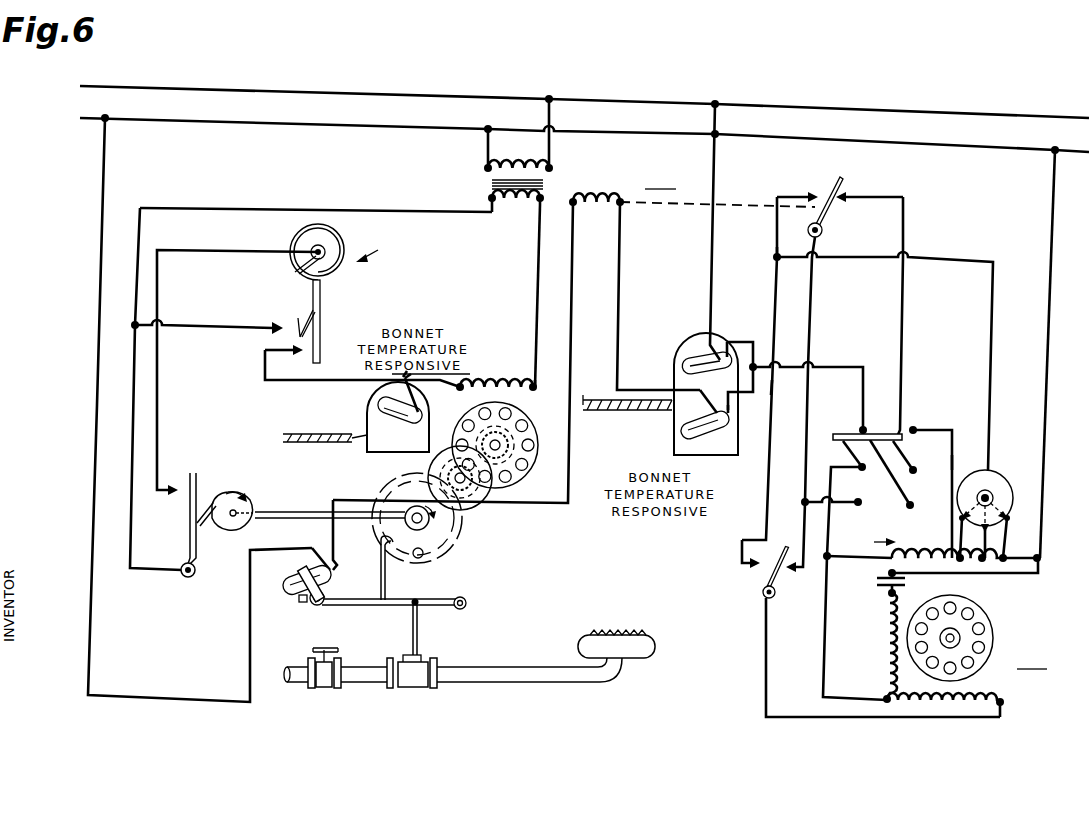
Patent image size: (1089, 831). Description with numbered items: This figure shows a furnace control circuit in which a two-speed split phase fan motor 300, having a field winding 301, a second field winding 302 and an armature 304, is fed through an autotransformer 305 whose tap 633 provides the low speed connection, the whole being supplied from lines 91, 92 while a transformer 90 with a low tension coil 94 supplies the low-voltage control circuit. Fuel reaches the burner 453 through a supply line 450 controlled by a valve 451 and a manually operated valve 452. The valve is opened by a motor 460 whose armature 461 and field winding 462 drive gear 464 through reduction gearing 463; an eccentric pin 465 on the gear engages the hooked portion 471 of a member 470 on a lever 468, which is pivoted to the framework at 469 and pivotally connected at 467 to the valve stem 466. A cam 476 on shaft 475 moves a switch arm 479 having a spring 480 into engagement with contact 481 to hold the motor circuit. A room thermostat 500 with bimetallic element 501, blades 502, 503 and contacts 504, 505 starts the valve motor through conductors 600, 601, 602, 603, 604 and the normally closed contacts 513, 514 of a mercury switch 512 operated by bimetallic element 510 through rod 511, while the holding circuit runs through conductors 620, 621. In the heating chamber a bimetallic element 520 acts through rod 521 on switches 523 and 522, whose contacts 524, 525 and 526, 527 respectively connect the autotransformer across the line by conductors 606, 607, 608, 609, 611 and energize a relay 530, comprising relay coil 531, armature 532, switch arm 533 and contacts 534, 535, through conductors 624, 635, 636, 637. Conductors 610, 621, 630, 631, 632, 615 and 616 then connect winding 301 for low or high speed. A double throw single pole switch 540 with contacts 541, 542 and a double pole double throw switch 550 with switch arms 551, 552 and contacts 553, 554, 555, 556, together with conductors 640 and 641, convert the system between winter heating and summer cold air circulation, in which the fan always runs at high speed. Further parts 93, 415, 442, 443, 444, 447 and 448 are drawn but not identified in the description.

The transformer 90 is at (548, 187).
The line 91 is at (850, 106).
The line 92 is at (887, 138).
The primary winding 93 is at (522, 158).
The low tension coil 94 is at (516, 212).
The two speed motor 300 is at (1032, 662).
The field winding 301 is at (966, 706).
The second field winding 302 is at (884, 632).
The armature 304 is at (976, 492).
The autotransformer 305 is at (866, 541).
The capacitor 415 is at (988, 576).
The valve lever 442 is at (298, 576).
The link 443 is at (312, 549).
The link 444 is at (338, 564).
The cam follower 447 is at (256, 532).
The pivot 448 is at (226, 544).
The fuel supply line 450 is at (369, 690).
The valve 451 is at (408, 688).
The manually operated valve 452 is at (312, 690).
The burner 453 is at (658, 651).
The motor 460 is at (540, 420).
The armature 461 is at (538, 460).
The field winding 462 is at (490, 380).
The reduction gearing 463 is at (474, 510).
The gear 464 is at (463, 527).
The pin 465 is at (424, 554).
The valve stem 466 is at (420, 634).
The pivotal connection 467 is at (404, 608).
The lever 468 is at (352, 606).
The pivot 469 is at (465, 606).
The member 470 is at (388, 580).
The hooked portion 471 is at (400, 534).
The shaft 475 is at (310, 508).
The cam 476 is at (250, 494).
The switch arm 479 is at (188, 506).
The spring 480 is at (208, 500).
The contact 481 is at (176, 486).
The room thermostat 500 is at (375, 245).
The bimetallic element 501 is at (296, 236).
The blade 502 is at (321, 316).
The blade 503 is at (302, 316).
The contact 504 is at (292, 348).
The contact 505 is at (276, 325).
The bimetallic element 510 is at (337, 428).
The rod 511 is at (284, 440).
The mercury switch 512 is at (397, 418).
The contact 513 is at (368, 394).
The contact 514 is at (419, 404).
The bimetallic element 520 is at (647, 430).
The rod 521 is at (583, 398).
The switch 522 is at (705, 433).
The switch 523 is at (686, 350).
The contact 524 is at (712, 333).
The contact 525 is at (720, 337).
The contact 526 is at (695, 402).
The contact 527 is at (729, 416).
The relay 530 is at (660, 179).
The relay coil 531 is at (579, 202).
The armature 532 is at (674, 222).
The switch arm 533 is at (842, 196).
The contact 534 is at (816, 194).
The contact 535 is at (849, 202).
The double throw single pole switch 540 is at (760, 584).
The contact 541 is at (740, 549).
The contact 542 is at (790, 568).
The double pole double throw switch 550 is at (886, 424).
The switch arm 551 is at (846, 453).
The switch arm 552 is at (903, 451).
The contact 553 is at (860, 428).
The contact 554 is at (916, 429).
The contact 555 is at (860, 506).
The contact 556 is at (910, 508).
The conductor 600 is at (311, 206).
The conductor 601 is at (210, 324).
The conductor 602 is at (263, 382).
The conductor 603 is at (478, 376).
The conductor 604 is at (535, 283).
The conductor 606 is at (740, 264).
The conductor 607 is at (760, 326).
The conductor 608 is at (830, 368).
The conductor 609 is at (804, 525).
The conductor 610 is at (822, 624).
The conductor 611 is at (1046, 358).
The conductor 615 is at (777, 223).
The conductor 616 is at (866, 262).
The conductor 620 is at (131, 439).
The conductor 621 is at (844, 720).
The conductor 624 is at (96, 406).
The conductor 630 is at (816, 338).
The conductor 631 is at (902, 332).
The conductor 632 is at (952, 462).
The tap 633 is at (928, 554).
The conductor 635 is at (568, 464).
The conductor 636 is at (618, 272).
The conductor 637 is at (774, 388).
The conductor 640 is at (839, 491).
The conductor 641 is at (768, 488).